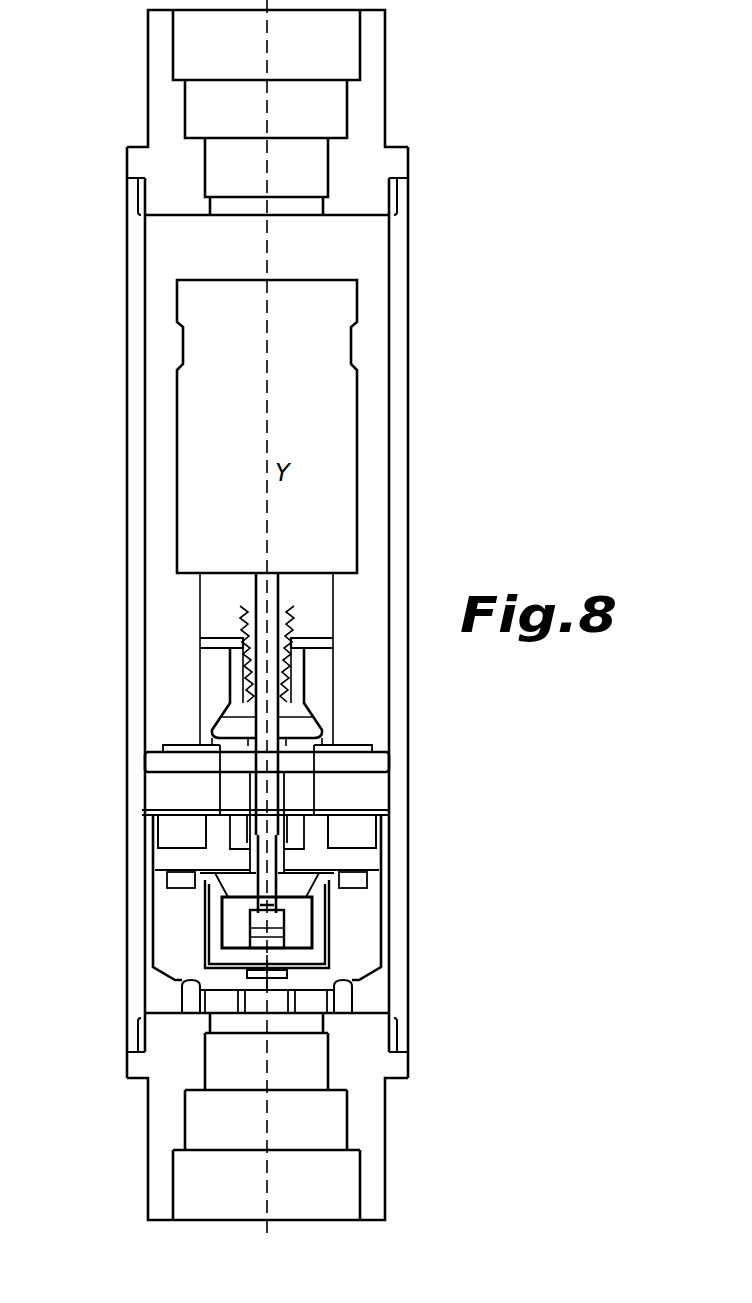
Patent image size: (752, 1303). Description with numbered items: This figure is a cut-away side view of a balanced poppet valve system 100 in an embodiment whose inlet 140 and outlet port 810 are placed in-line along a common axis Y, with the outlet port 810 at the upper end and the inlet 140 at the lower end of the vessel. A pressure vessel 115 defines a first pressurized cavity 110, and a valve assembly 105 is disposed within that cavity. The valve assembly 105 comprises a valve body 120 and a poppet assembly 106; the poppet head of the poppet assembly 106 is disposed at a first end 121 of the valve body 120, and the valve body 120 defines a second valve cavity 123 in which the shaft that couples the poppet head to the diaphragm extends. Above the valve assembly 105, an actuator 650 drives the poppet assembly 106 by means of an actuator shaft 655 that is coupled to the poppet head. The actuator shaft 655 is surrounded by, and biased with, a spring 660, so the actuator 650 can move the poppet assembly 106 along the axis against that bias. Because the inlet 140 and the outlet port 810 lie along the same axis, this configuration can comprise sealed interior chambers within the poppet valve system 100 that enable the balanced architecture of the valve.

The balanced poppet valve system 100 is at (442, 96).
The first pressurized cavity 110 is at (361, 255).
The outlet port 810 is at (186, 103).
The pressure vessel 115 is at (126, 675).
The valve body 120 is at (126, 910).
The inlet 140 is at (148, 1142).
The actuator 650 is at (358, 463).
The actuator shaft 655 is at (249, 590).
The spring 660 is at (203, 641).
The valve assembly 105 is at (365, 730).
The poppet assembly 106 is at (323, 704).
The first end 121 is at (176, 745).
The second valve cavity 123 is at (359, 931).